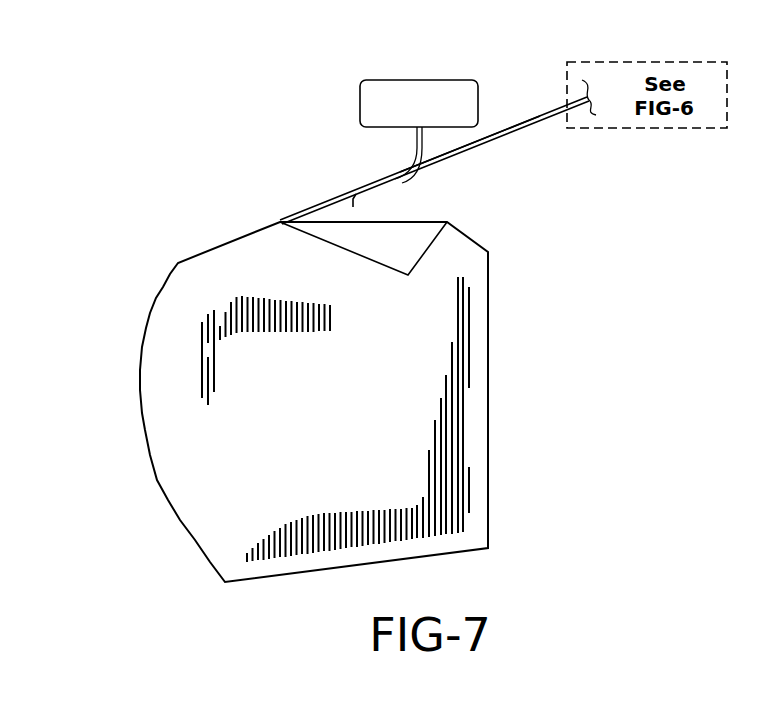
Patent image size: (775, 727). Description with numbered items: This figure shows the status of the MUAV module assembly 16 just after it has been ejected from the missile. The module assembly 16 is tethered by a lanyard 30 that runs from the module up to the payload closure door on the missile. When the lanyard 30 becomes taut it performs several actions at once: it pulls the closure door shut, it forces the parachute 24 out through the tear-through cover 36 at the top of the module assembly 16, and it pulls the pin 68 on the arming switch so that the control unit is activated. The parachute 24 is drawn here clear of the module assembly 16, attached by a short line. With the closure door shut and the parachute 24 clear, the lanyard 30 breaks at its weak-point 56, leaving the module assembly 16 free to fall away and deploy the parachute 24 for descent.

The module assembly 16 is at (202, 254).
The parachute 24 is at (380, 81).
The lanyard 30 is at (521, 122).
The tear-through cover 36 is at (363, 245).
The weak-point 56 is at (483, 144).
The pin 68 is at (357, 200).